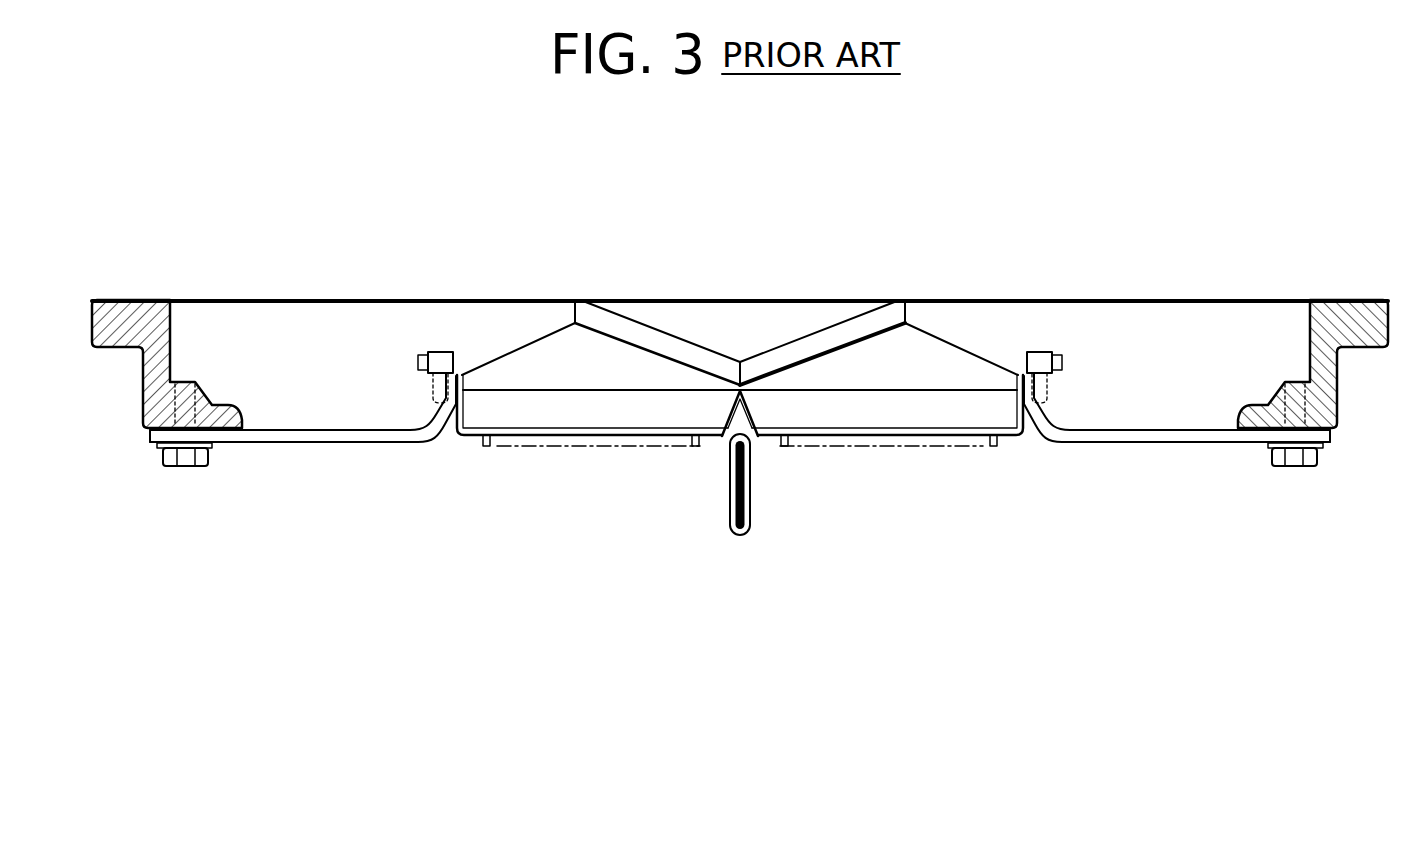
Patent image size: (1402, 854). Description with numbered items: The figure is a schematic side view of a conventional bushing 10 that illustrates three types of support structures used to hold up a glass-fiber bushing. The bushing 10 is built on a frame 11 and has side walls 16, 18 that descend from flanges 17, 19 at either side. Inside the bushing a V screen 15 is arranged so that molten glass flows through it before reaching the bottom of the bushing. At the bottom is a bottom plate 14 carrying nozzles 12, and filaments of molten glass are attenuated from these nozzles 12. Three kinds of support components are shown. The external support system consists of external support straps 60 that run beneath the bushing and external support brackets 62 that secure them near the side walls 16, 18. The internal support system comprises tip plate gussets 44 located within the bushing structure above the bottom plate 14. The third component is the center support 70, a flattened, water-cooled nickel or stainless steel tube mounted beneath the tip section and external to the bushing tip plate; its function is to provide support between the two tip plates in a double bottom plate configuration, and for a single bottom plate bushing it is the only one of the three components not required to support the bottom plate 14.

The bushing 10 is at (891, 253).
The frame 11 is at (127, 298).
The nozzles 12 is at (483, 443).
The bottom plate 14 is at (633, 437).
The V screen 15 is at (660, 340).
The side wall 16 is at (502, 360).
The flange 17 is at (383, 298).
The side wall 18 is at (952, 343).
The flange 19 is at (1073, 299).
The tip plate gussets 44 is at (533, 390).
The external support straps 60 is at (1143, 447).
The external support brackets 62 is at (1045, 352).
The center support 70 is at (750, 492).